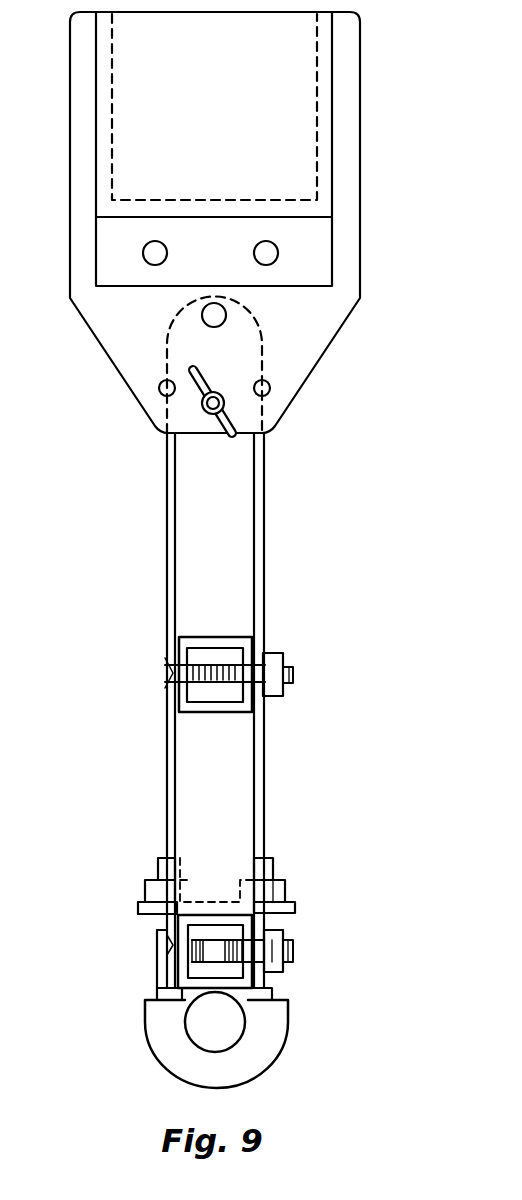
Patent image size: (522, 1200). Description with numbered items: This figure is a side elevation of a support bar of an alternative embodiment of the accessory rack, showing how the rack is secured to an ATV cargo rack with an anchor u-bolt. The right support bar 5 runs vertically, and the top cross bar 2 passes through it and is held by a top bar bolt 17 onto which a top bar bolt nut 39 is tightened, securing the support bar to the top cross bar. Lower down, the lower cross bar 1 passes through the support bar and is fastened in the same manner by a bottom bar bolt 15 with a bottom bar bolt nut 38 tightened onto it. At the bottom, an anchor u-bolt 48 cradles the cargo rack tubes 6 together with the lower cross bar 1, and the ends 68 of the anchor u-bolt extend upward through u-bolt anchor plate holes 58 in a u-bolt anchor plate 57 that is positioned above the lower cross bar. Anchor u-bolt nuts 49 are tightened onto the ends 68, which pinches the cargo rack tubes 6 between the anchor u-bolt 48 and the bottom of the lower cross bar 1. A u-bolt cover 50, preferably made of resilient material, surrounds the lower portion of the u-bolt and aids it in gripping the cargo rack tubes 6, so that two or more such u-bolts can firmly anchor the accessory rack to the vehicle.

The lower cross bar 1 is at (210, 913).
The top cross bar 2 is at (240, 636).
The right support bar 5 is at (264, 503).
The cargo rack tubes 6 is at (227, 1025).
The bottom bar bolts 15 is at (167, 950).
The top bar bolt 17 is at (288, 687).
The bottom bar bolt nut 38 is at (277, 925).
The top bar bolt nut 39 is at (265, 652).
The anchor u-bolt 48 is at (157, 938).
The anchor u-bolt nuts 49 is at (147, 880).
The u-bolt cover 50 is at (145, 1025).
The u-bolt anchor plate 57 is at (138, 908).
The u-bolt anchor plate holes 58 is at (157, 913).
The ends of the anchor u-bolts 68 is at (160, 858).